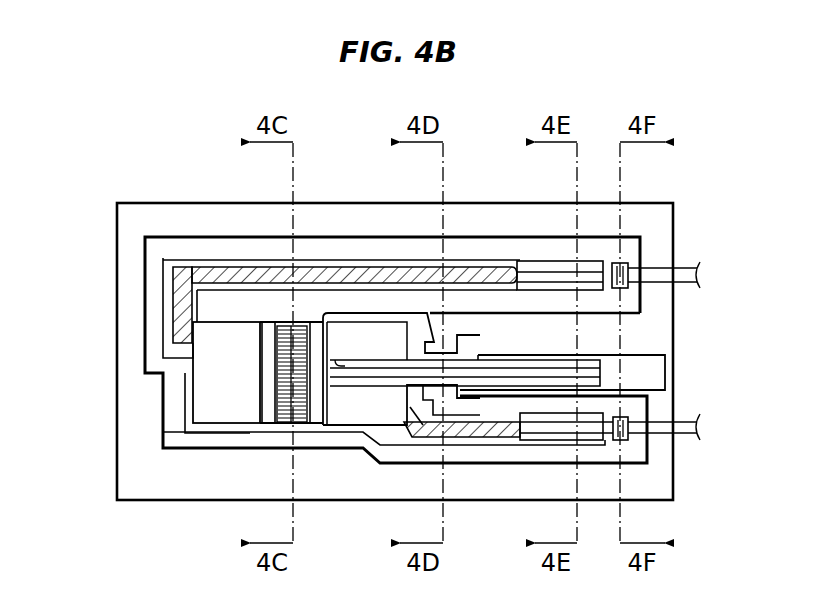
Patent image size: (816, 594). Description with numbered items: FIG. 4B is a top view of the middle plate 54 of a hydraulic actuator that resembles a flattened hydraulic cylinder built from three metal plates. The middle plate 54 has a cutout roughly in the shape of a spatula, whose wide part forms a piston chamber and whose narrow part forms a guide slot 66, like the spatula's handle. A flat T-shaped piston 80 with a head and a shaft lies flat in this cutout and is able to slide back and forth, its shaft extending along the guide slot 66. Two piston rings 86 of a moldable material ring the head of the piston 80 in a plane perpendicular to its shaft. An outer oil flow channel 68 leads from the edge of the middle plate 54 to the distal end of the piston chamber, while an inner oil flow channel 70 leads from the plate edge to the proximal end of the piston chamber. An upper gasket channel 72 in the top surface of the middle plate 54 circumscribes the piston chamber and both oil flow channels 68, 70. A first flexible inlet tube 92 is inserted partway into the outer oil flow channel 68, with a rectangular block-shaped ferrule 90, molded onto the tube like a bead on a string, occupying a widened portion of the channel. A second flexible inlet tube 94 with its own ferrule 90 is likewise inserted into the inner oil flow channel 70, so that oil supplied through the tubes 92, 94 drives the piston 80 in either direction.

The middle plate 54 is at (123, 257).
The guide slot 66 is at (653, 378).
The outer oil flow channel 68 is at (173, 317).
The inner oil flow channel 70 is at (482, 438).
The upper gasket channel 72 is at (493, 258).
The piston 80 is at (218, 388).
The piston rings 86 is at (267, 425).
The ferrule 90 is at (622, 264).
The first flexible inlet tube 92 is at (700, 270).
The second flexible inlet tube 94 is at (700, 421).